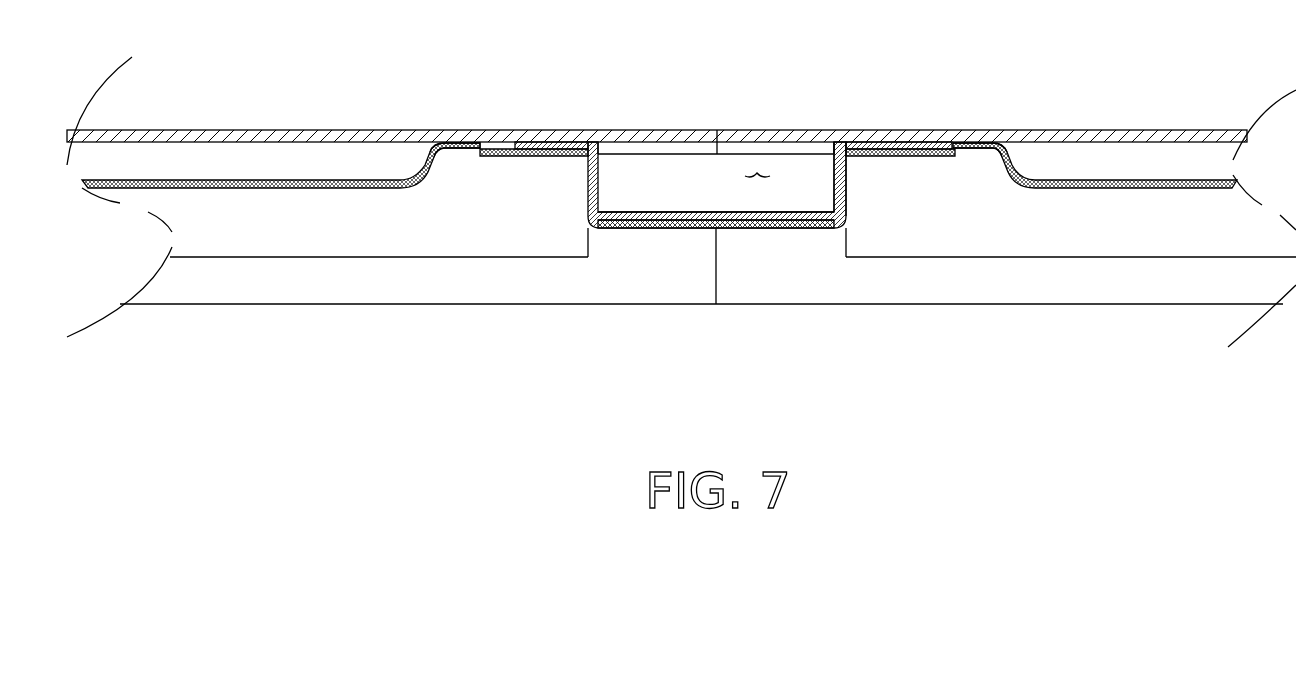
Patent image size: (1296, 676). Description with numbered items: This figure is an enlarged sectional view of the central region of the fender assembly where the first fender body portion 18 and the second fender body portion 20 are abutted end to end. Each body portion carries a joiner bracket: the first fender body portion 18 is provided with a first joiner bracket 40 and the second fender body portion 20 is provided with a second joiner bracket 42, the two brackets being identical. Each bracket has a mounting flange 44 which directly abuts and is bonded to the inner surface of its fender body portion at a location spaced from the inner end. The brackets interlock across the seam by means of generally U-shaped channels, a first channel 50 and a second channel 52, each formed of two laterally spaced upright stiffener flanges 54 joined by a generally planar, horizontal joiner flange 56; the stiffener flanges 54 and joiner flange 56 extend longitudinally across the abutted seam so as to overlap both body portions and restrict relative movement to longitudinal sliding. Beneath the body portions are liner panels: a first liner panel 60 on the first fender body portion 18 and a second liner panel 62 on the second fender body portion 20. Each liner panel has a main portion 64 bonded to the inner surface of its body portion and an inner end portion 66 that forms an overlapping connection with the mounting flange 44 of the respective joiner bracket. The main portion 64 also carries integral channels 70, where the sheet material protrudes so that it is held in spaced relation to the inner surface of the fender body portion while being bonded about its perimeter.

The first fender body portion 18 is at (313, 297).
The second fender body portion 20 is at (988, 290).
The first joiner bracket 40 is at (592, 190).
The second joiner bracket 42 is at (848, 192).
The mounting flange 44 is at (540, 142).
The first channel 50 is at (673, 210).
The second channel 52 is at (666, 232).
The upright stiffener flange 54 is at (757, 172).
The joiner flange 56 is at (770, 292).
The first liner panel 60 is at (245, 187).
The second liner panel 62 is at (1120, 188).
The main portion 64 is at (452, 149).
The inner end portion 66 is at (494, 157).
The integral channel 70 is at (333, 178).